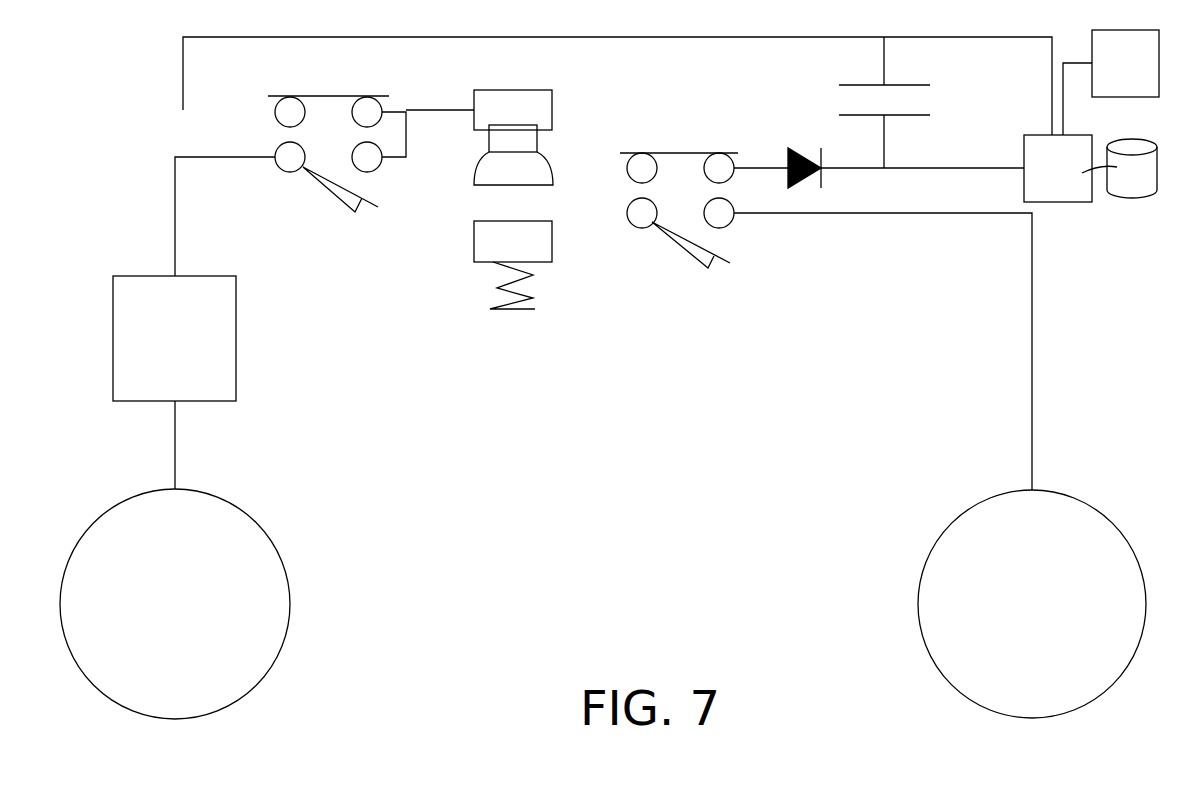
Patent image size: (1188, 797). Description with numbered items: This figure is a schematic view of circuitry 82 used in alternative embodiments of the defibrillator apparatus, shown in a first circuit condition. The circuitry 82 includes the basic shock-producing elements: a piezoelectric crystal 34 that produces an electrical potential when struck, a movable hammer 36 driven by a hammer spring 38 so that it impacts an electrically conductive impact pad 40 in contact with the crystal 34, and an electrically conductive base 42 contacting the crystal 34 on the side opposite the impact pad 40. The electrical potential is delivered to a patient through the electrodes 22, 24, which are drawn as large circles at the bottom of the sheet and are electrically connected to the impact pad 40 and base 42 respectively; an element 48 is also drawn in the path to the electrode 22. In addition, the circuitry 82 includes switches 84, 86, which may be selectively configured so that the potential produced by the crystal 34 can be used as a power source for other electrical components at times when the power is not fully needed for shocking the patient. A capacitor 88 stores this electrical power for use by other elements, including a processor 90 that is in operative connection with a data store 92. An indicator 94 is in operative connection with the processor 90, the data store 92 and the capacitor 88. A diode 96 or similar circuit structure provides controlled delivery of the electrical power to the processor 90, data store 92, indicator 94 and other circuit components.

The electrode 22 is at (255, 685).
The electrode 24 is at (1073, 493).
The piezoelectric crystal 34 is at (537, 140).
The hammer 36 is at (552, 240).
The hammer spring 38 is at (493, 285).
The impact pad 40 is at (477, 172).
The base 42 is at (513, 90).
The motor 48 is at (236, 337).
The circuitry 82 is at (580, 412).
The switch 84 is at (268, 133).
The switch 86 is at (742, 193).
The capacitor 88 is at (860, 72).
The processor 90 is at (1055, 202).
The data store 92 is at (1132, 190).
The indicator 94 is at (1142, 77).
The diode 96 is at (810, 182).